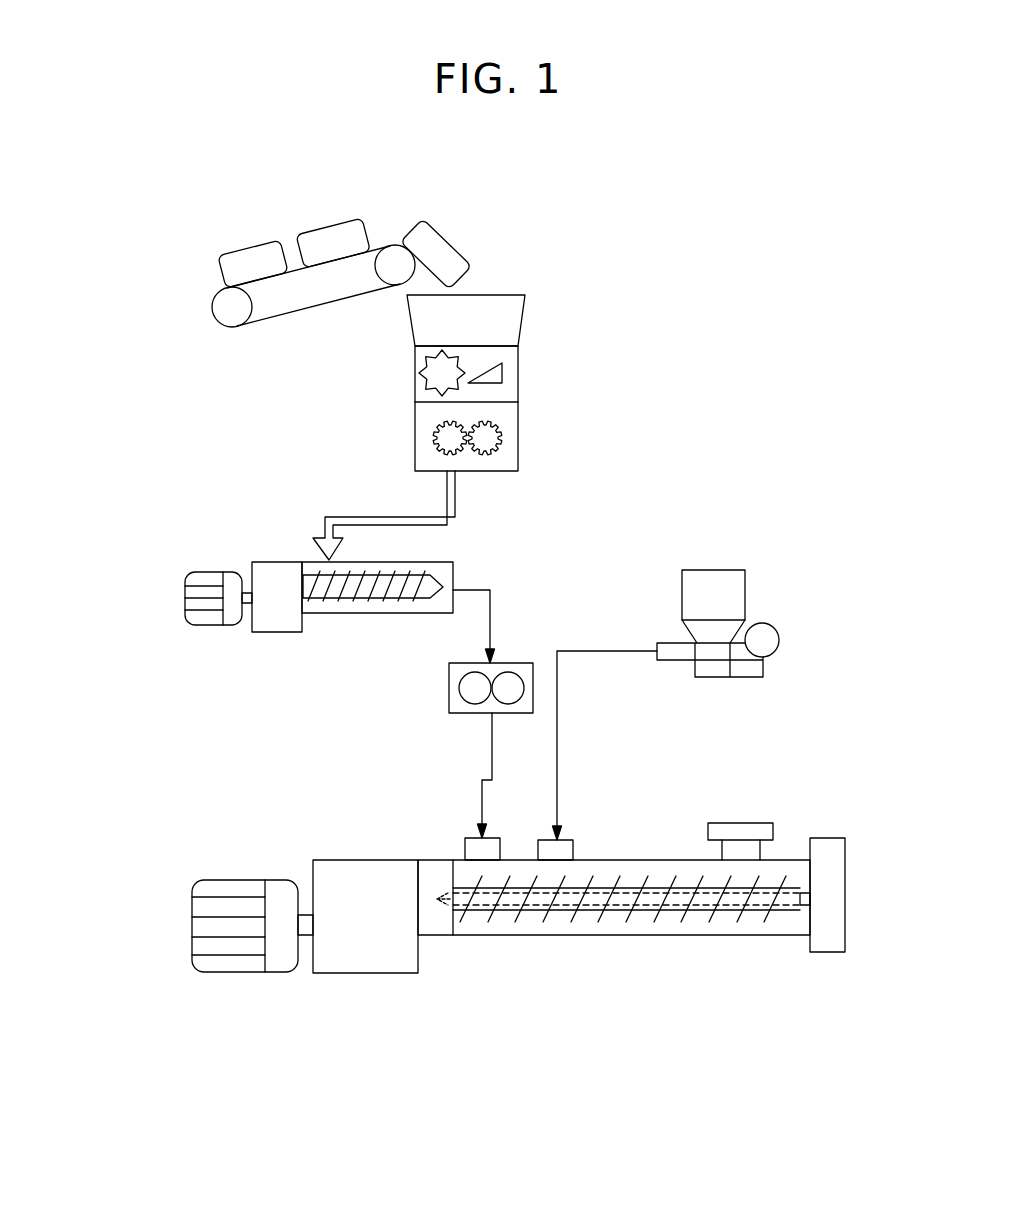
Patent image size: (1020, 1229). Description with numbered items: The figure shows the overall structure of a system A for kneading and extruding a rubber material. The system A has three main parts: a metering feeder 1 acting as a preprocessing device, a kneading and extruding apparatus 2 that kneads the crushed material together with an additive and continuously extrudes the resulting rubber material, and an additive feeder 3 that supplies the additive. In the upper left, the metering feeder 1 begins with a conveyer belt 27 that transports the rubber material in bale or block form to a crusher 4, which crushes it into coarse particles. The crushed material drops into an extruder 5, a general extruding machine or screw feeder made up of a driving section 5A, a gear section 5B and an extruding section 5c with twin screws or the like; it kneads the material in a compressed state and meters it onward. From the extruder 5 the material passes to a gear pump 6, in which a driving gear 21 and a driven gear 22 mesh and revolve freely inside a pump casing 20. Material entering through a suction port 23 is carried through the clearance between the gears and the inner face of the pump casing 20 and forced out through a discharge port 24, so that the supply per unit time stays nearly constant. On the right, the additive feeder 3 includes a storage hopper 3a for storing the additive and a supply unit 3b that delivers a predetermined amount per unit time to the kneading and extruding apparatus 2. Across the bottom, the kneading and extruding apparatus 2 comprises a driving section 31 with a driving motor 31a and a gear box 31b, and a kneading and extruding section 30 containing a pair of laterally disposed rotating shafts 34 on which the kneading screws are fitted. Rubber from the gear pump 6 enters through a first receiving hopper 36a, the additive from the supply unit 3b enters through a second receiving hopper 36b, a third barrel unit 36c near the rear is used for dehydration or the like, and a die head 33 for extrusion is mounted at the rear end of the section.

The metering feeder 1 is at (210, 421).
The kneading and extruding apparatus 2 is at (243, 841).
The additive feeder 3 is at (733, 548).
The storage hopper 3a is at (683, 590).
The supply unit 3b is at (715, 655).
The crusher 4 is at (540, 358).
The extruder 5 is at (303, 545).
The driving section 5A is at (226, 630).
The gear section 5B is at (278, 622).
The extruding section 5c is at (392, 571).
The gear pump 6 is at (430, 652).
The pump casing 20 is at (528, 662).
The driving gear 21 is at (511, 695).
The driven gear 22 is at (464, 692).
The suction port 23 is at (505, 650).
The discharge port 24 is at (478, 712).
The conveyer belt 27 is at (317, 315).
The kneading and extruding section 30 is at (603, 952).
The driving section 31 is at (327, 988).
The driving motor 31a is at (234, 962).
The gear box 31b is at (380, 942).
The die head 33 is at (825, 848).
The rotating shafts 34 is at (720, 905).
The first receiving hopper 36a is at (465, 850).
The second receiving hopper 36b is at (573, 850).
The third barrel unit 36c is at (737, 830).
The system A is at (712, 470).